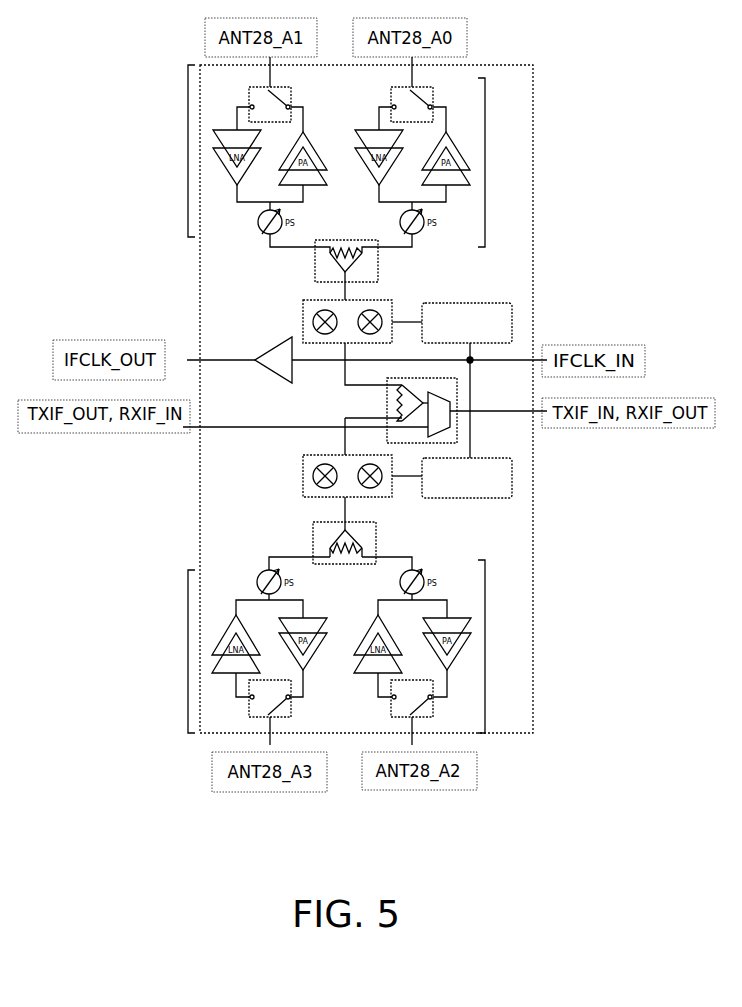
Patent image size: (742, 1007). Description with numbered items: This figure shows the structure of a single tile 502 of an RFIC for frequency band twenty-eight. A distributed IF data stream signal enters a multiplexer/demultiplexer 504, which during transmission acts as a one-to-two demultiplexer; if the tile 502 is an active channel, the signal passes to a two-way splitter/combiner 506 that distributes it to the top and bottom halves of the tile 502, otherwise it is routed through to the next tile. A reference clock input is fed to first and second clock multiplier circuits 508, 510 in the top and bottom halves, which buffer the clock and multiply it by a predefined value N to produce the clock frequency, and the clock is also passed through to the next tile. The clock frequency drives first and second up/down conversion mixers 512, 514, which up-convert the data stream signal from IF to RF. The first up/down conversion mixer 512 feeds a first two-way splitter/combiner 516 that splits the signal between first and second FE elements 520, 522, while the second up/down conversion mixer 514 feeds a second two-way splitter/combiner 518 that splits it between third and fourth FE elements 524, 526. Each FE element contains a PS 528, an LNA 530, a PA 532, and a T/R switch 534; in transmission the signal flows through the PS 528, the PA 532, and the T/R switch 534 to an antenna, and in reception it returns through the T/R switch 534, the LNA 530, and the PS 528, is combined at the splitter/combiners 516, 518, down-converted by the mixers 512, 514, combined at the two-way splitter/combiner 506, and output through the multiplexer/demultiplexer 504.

The tile 502 is at (533, 90).
The multiplexer/demultiplexer 504 is at (458, 400).
The two-way splitter/combiner 506 is at (396, 397).
The first clock multiplier circuit 508 is at (512, 323).
The second clock multiplier circuit 510 is at (512, 478).
The first up/down conversion mixer 512 is at (303, 315).
The second up/down conversion mixer 514 is at (303, 476).
The first two-way splitter/combiner 516 is at (315, 268).
The second two-way splitter/combiner 518 is at (313, 536).
The first FE element 520 is at (440, 155).
The second FE element 522 is at (188, 153).
The third FE element 524 is at (485, 645).
The fourth FE element 526 is at (188, 645).
The PS 528 is at (430, 230).
The LNA 530 is at (368, 129).
The PA 532 is at (458, 160).
The T/R switch 534 is at (432, 106).